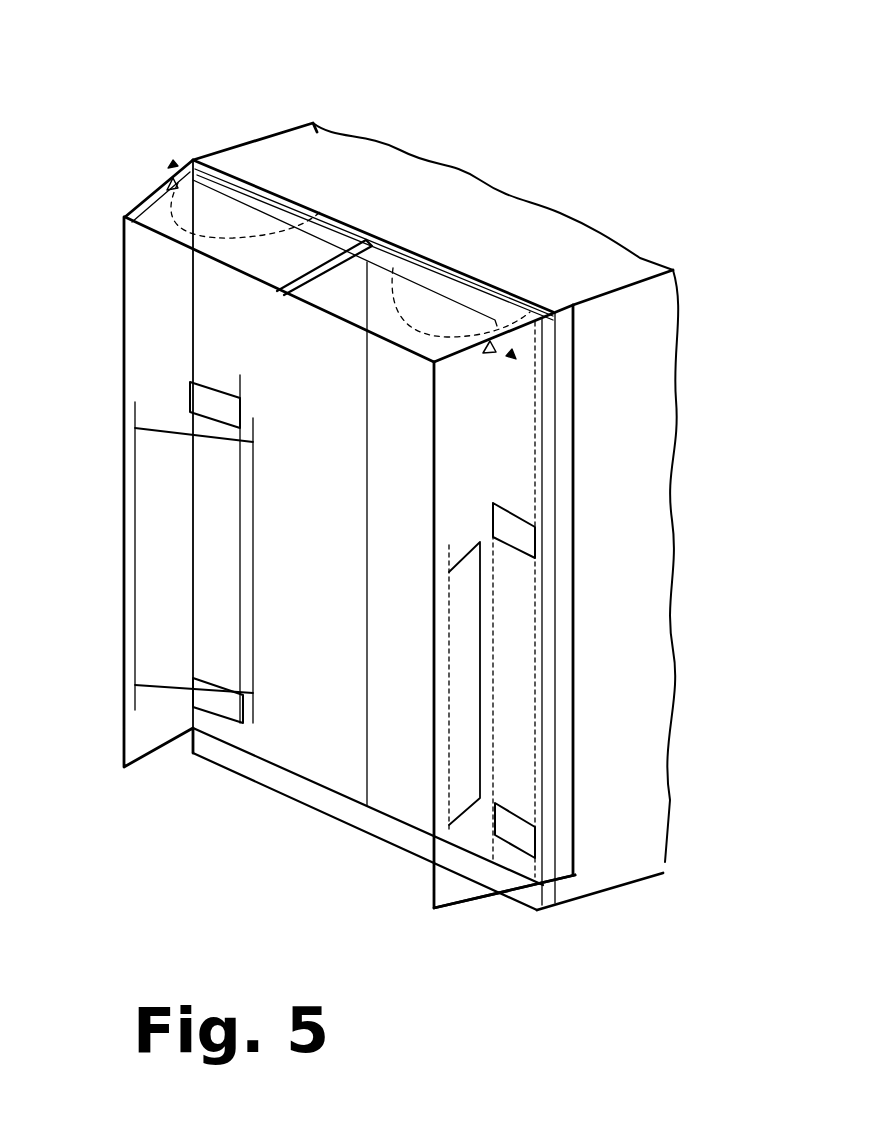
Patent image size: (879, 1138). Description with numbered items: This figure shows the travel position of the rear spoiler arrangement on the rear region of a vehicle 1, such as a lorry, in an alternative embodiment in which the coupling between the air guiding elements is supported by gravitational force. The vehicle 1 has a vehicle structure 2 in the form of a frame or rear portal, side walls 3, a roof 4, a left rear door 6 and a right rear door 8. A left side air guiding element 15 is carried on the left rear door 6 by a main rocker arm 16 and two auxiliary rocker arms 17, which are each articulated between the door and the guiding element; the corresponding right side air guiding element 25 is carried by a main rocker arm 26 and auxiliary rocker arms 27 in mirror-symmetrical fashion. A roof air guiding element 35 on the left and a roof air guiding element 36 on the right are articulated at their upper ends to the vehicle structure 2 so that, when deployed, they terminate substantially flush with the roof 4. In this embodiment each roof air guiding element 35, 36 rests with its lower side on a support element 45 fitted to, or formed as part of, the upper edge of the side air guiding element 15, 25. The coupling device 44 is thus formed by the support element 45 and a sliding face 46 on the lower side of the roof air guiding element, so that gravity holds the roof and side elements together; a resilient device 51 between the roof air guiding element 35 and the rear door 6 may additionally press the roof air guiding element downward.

The vehicle 1 is at (228, 143).
The vehicle structure 2 is at (545, 240).
The side walls 3 is at (637, 313).
The roof 4 is at (282, 147).
The left rear door 6 is at (290, 737).
The right rear door 8 is at (400, 827).
The left side air guiding element 15 is at (143, 738).
The main rocker arm 16 is at (167, 652).
The auxiliary rocker arms 17 is at (217, 403).
The side air guiding element 25 is at (452, 902).
The main rocker arm 26 is at (470, 650).
The auxiliary rocker arms 27 is at (520, 537).
The roof air guiding element 35 is at (125, 217).
The roof air guiding element 36 is at (340, 292).
The coupling device 44 is at (173, 155).
The support element 45 is at (168, 186).
The sliding face 46 is at (262, 239).
The resilient device 51 is at (242, 210).